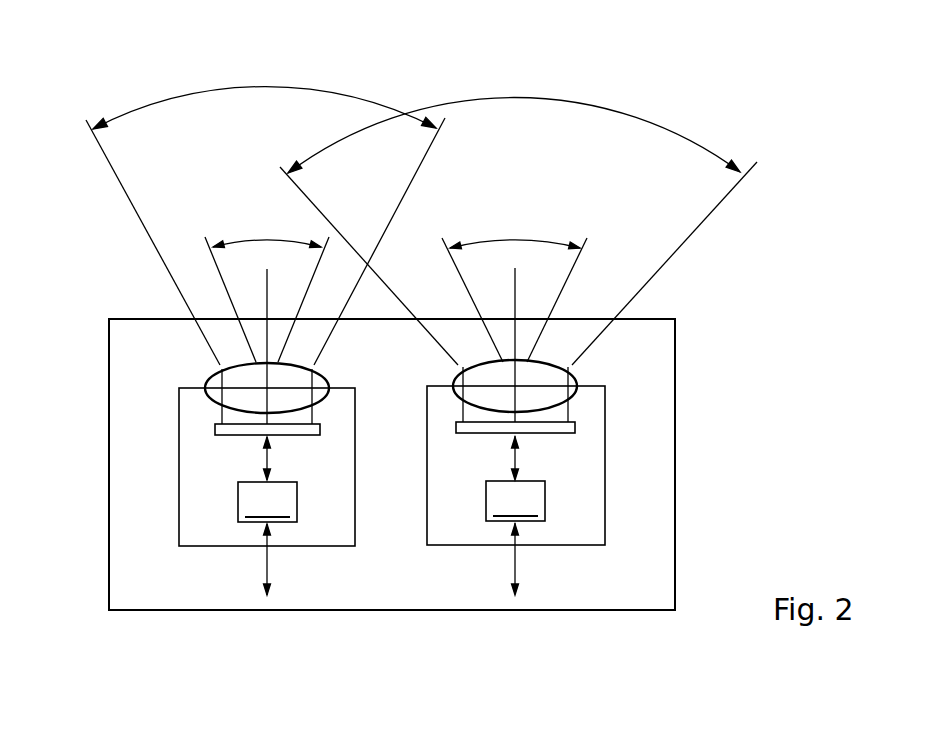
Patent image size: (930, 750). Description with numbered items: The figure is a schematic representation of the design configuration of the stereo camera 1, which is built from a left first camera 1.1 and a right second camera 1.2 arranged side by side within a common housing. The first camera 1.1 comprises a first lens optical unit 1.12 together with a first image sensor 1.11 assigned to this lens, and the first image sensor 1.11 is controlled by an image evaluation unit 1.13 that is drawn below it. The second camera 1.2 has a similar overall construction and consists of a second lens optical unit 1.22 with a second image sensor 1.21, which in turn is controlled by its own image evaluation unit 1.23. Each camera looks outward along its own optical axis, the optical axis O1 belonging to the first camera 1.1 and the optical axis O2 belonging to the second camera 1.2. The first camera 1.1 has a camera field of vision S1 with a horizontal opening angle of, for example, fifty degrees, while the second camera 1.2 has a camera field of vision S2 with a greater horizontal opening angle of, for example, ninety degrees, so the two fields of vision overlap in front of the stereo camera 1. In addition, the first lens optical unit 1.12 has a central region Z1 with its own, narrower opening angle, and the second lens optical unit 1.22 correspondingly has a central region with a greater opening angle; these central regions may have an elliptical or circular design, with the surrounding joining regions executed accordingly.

The stereo camera 1 is at (689, 398).
The first camera 1.1 is at (179, 467).
The second camera 1.2 is at (605, 463).
The first image sensor 1.11 is at (218, 428).
The first lens optical unit 1.12 is at (210, 385).
The image evaluation unit 1.13 is at (267, 502).
The second image sensor 1.21 is at (572, 423).
The second lens optical unit 1.22 is at (574, 384).
The image evaluation unit 1.23 is at (515, 501).
The camera field of vision S1 is at (155, 245).
The camera field of vision S2 is at (667, 263).
The optical axis O1 is at (266, 302).
The optical axis O2 is at (514, 302).
The central region Z1 is at (216, 267).